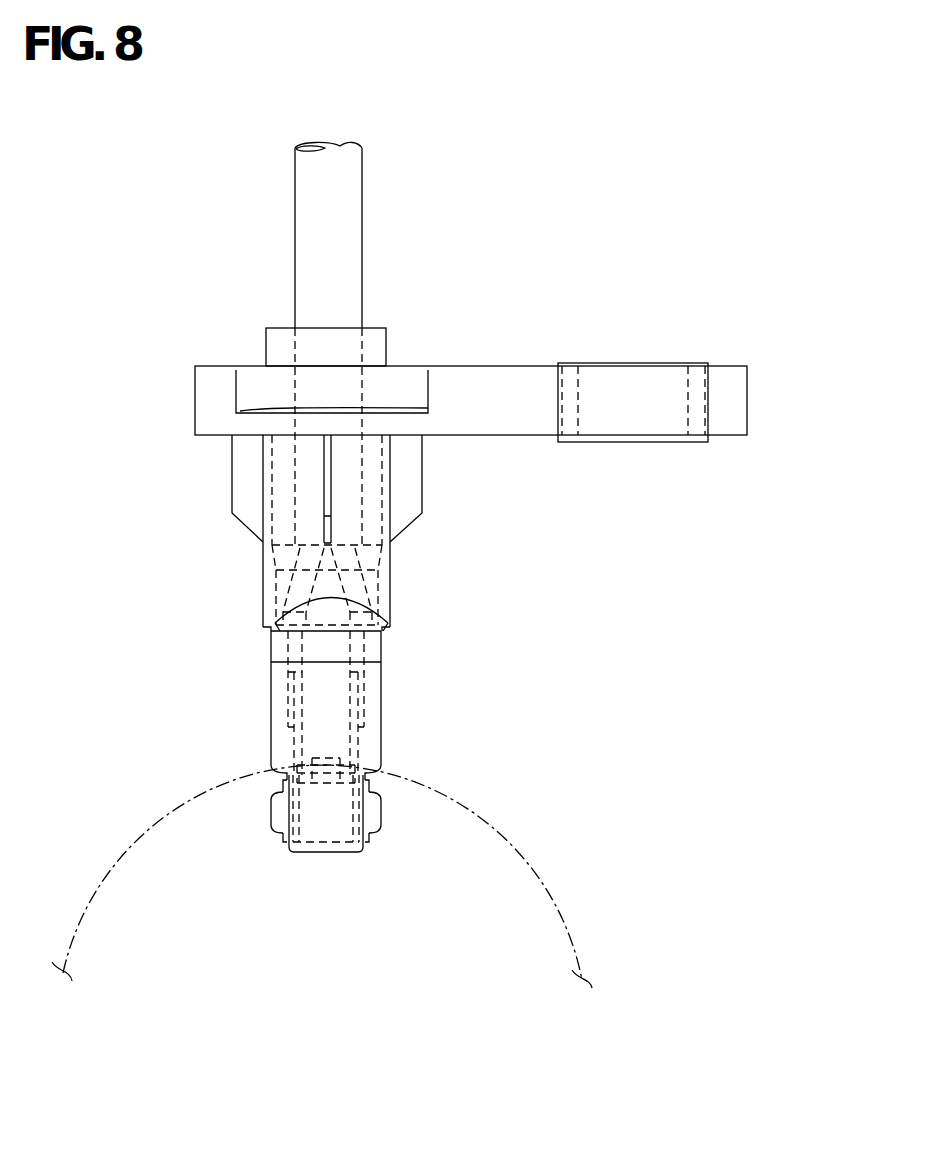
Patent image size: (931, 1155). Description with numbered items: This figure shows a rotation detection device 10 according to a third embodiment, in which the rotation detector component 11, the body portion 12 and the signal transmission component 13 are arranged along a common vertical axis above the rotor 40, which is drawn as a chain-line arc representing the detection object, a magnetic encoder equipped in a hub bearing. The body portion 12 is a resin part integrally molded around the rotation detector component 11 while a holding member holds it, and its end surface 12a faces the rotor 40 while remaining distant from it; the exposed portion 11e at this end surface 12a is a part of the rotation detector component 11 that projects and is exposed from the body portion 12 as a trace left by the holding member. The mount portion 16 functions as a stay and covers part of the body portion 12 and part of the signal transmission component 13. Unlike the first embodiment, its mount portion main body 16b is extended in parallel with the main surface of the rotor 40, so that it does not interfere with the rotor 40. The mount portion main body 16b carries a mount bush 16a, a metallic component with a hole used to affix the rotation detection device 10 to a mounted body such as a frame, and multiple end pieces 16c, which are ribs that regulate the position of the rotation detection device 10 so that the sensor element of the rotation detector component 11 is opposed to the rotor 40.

The rotation detection device 10 is at (423, 283).
The rotation detector component 11 is at (327, 818).
The exposed portion 11e is at (283, 841).
The body portion 12 is at (268, 698).
The end surface 12a is at (257, 777).
The signal transmission component 13 is at (313, 243).
The mount portion 16 is at (490, 367).
The mount bush 16a is at (573, 442).
The mount portion main body 16b is at (498, 422).
The end pieces 16c is at (250, 500).
The rotor 40 is at (520, 850).